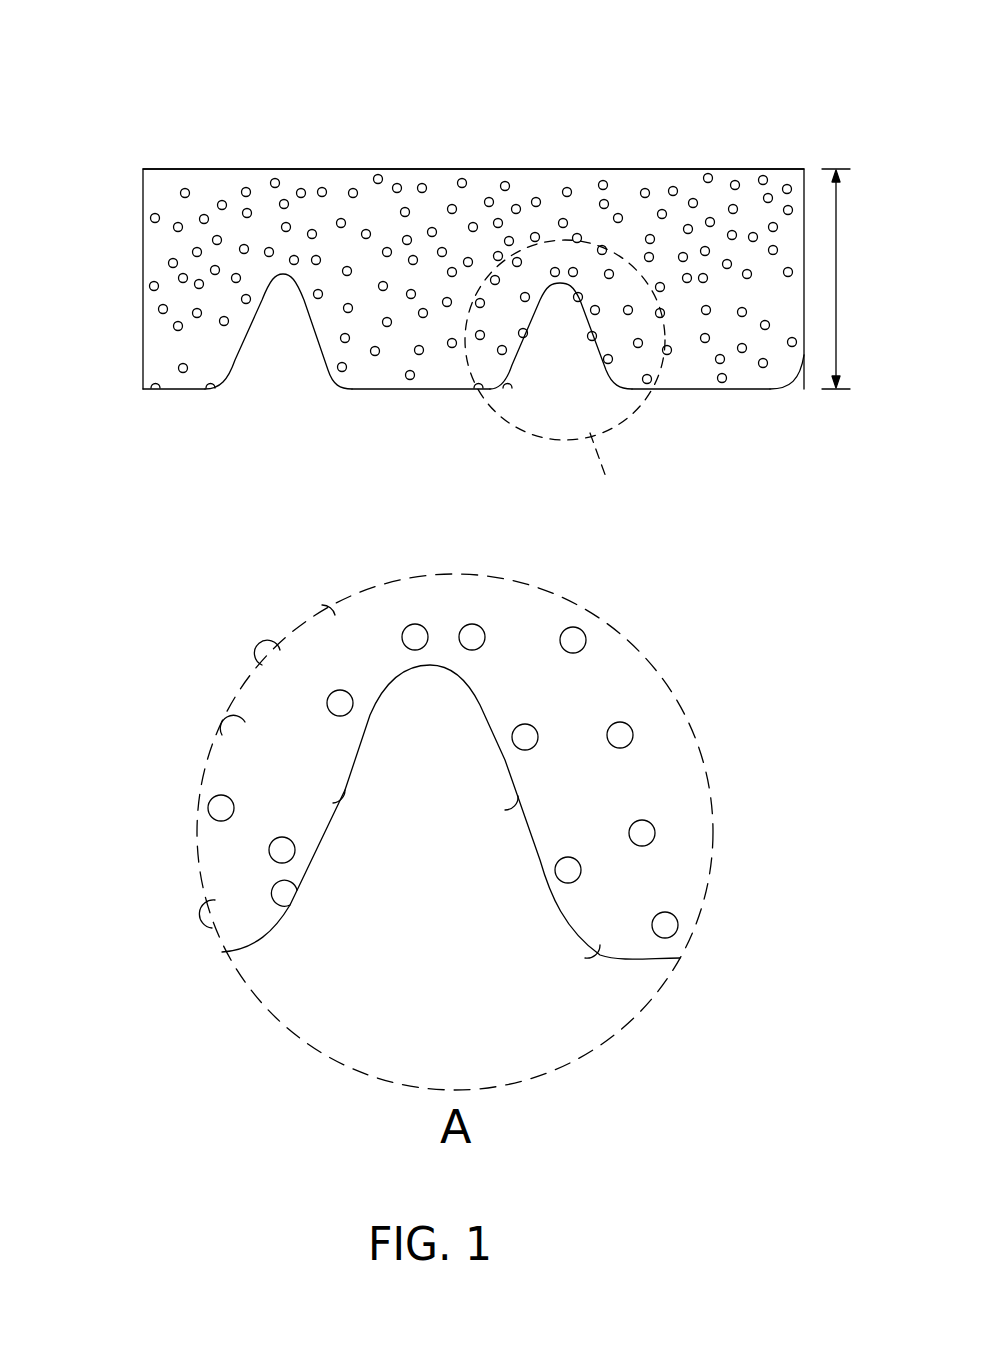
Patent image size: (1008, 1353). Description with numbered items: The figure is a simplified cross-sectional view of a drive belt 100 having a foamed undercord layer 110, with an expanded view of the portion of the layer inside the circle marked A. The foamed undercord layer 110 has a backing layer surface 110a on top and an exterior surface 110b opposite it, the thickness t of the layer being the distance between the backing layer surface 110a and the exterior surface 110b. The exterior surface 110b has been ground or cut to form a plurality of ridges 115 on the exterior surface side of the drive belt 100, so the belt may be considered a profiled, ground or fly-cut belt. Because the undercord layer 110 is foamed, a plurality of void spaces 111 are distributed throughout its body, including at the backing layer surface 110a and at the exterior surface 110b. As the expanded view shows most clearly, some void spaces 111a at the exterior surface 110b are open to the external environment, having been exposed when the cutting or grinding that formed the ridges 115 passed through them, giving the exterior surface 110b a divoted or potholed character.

In FIG. 1, the drive belt 100 is at (130, 60).
In FIG. 1, the foamed undercord layer 110 is at (806, 202).
In FIG. 1, the backing layer surface 110a is at (333, 169).
In FIG. 1, the exterior surface 110b is at (447, 392).
In FIG. 1, the void spaces 111 is at (708, 178).
In FIG. 1A, the void spaces 111 is at (278, 840).
In FIG. 1, the void spaces open to the external environment 111a is at (155, 383).
In FIG. 1A, the void spaces open to the external environment 111a is at (518, 806).
In FIG. 1, the ridges 115 is at (372, 370).
In FIG. 1A, the ridges 115 is at (655, 878).